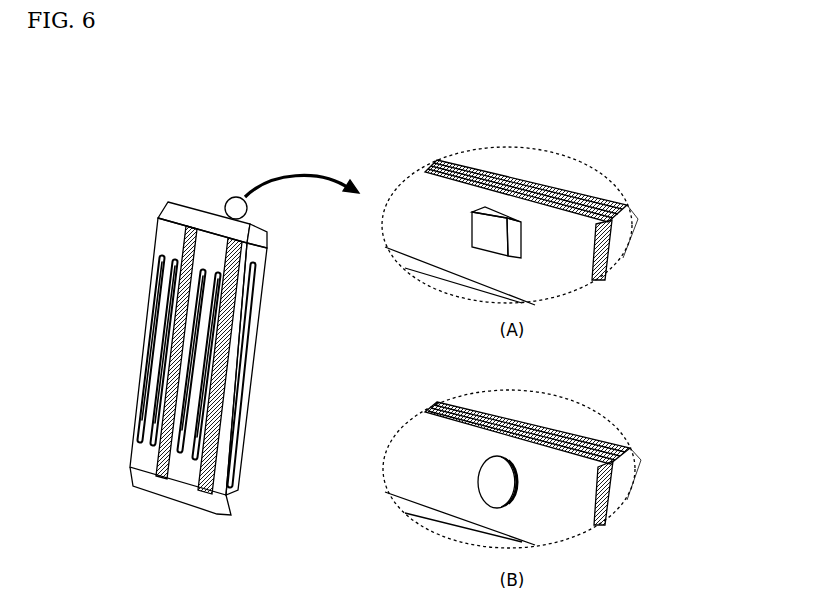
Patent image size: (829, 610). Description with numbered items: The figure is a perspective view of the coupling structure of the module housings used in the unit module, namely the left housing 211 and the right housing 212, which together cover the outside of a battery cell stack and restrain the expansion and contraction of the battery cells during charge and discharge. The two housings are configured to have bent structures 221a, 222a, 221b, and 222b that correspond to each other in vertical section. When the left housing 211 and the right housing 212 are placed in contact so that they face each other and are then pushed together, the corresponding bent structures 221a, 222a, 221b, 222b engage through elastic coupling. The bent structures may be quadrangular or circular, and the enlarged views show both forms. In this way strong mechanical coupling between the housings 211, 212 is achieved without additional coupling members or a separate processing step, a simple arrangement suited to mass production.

The left housing 211 is at (147, 330).
The right housing 212 is at (253, 368).
The bent structure 221a is at (495, 255).
The bent structure 222a is at (473, 211).
The bent structure 221b is at (486, 507).
The bent structure 222b is at (492, 468).